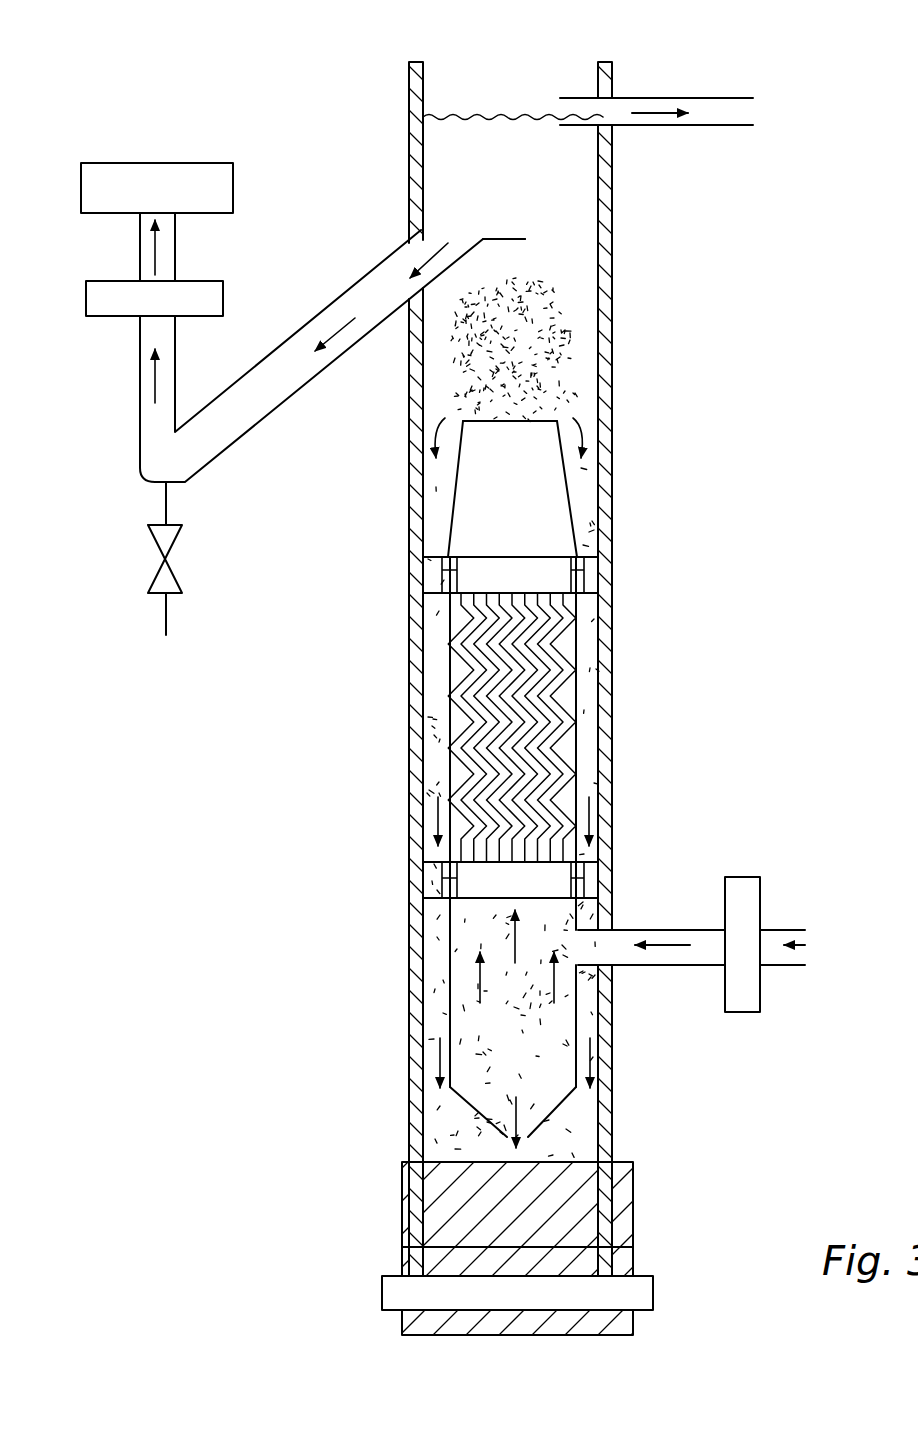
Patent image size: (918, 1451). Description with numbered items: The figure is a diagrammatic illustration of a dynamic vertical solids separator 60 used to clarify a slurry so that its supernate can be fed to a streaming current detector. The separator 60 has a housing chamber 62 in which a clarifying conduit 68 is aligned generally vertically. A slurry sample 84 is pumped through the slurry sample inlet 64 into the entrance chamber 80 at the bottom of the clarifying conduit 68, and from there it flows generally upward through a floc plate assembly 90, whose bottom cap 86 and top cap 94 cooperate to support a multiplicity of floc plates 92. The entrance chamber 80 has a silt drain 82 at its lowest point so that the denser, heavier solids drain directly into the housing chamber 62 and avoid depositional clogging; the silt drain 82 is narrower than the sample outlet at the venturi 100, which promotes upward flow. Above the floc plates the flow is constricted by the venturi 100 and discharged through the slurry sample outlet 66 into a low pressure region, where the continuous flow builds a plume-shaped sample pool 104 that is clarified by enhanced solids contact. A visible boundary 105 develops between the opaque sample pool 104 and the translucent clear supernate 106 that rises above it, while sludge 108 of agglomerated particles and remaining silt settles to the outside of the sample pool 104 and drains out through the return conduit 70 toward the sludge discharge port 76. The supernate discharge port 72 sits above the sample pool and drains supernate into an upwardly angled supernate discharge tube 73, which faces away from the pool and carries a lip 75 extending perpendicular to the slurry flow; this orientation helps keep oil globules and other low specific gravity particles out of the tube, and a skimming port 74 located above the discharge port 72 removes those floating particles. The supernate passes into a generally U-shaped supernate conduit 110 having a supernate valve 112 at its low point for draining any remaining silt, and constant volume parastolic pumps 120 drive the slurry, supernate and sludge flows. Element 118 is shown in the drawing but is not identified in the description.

The dynamic vertical solids separator 60 is at (363, 652).
The housing chamber 62 is at (618, 406).
The slurry sample inlet 64 is at (582, 945).
The slurry sample outlet 66 is at (533, 408).
The clarifying conduit 68 is at (441, 729).
The return conduit 70 is at (595, 750).
The supernate discharge port 72 is at (443, 230).
The supernate discharge tube 73 is at (430, 248).
The skimming port 74 is at (705, 95).
The lip 75 is at (502, 238).
The sludge discharge port 76 is at (640, 1253).
The entrance chamber 80 is at (448, 967).
The silt drain 82 is at (533, 1145).
The slurry sample 84 is at (815, 928).
The bottom cap 86 is at (433, 873).
The floc plate assembly 90 is at (575, 663).
The floc plates 92 is at (558, 702).
The top cap 94 is at (593, 577).
The venturi 100 is at (568, 495).
The sample pool 104 is at (575, 335).
The boundary 105 is at (590, 300).
The supernate 106 is at (527, 199).
The sludge 108 is at (440, 1147).
The supernate conduit 110 is at (365, 270).
The supernate valve 112 is at (157, 562).
The feed hopper 118 is at (162, 163).
The parastolic pumps 120 is at (658, 1295).